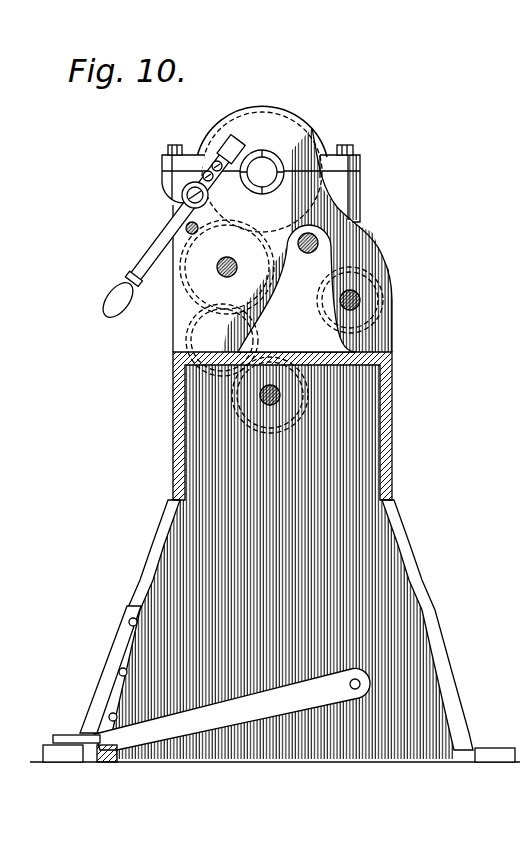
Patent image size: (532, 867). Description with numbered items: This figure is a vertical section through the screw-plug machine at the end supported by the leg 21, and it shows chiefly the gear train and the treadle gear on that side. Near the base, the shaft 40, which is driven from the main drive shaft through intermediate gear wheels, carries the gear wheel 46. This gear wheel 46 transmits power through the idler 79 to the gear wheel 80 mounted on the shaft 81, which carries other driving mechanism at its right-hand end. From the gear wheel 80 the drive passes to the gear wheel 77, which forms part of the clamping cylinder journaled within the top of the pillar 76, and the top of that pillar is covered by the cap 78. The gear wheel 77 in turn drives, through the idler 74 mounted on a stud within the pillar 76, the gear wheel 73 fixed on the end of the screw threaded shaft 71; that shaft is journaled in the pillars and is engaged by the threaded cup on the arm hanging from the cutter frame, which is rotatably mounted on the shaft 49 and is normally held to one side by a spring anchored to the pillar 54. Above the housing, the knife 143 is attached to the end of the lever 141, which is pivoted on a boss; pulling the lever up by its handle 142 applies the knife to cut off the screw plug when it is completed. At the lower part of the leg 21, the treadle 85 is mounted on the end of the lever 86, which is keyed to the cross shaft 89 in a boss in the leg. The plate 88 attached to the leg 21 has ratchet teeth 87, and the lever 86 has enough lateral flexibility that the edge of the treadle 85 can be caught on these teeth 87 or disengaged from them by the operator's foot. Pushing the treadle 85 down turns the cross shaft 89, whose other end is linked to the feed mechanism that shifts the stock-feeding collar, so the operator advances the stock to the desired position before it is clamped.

The leg 21 is at (430, 612).
The shaft 40 is at (270, 406).
The gear wheel 46 is at (302, 421).
The shaft 49 is at (318, 243).
The pillar 54 is at (297, 288).
The screw threaded shaft 71 is at (360, 301).
The gear wheel 73 is at (376, 290).
The idler 74 is at (352, 226).
The pillar 76 is at (175, 274).
The gear wheel 77 is at (322, 198).
The cap 78 is at (318, 125).
The idler 79 is at (202, 380).
The gear wheel 80 is at (182, 322).
The shaft 81 is at (228, 275).
The treadle 85 is at (63, 735).
The lever 86 is at (225, 700).
The ratchet teeth 87 is at (116, 757).
The plate 88 is at (128, 660).
The cross shaft 89 is at (368, 683).
The lever 141 is at (158, 238).
The handle 142 is at (108, 303).
The knife 143 is at (244, 150).